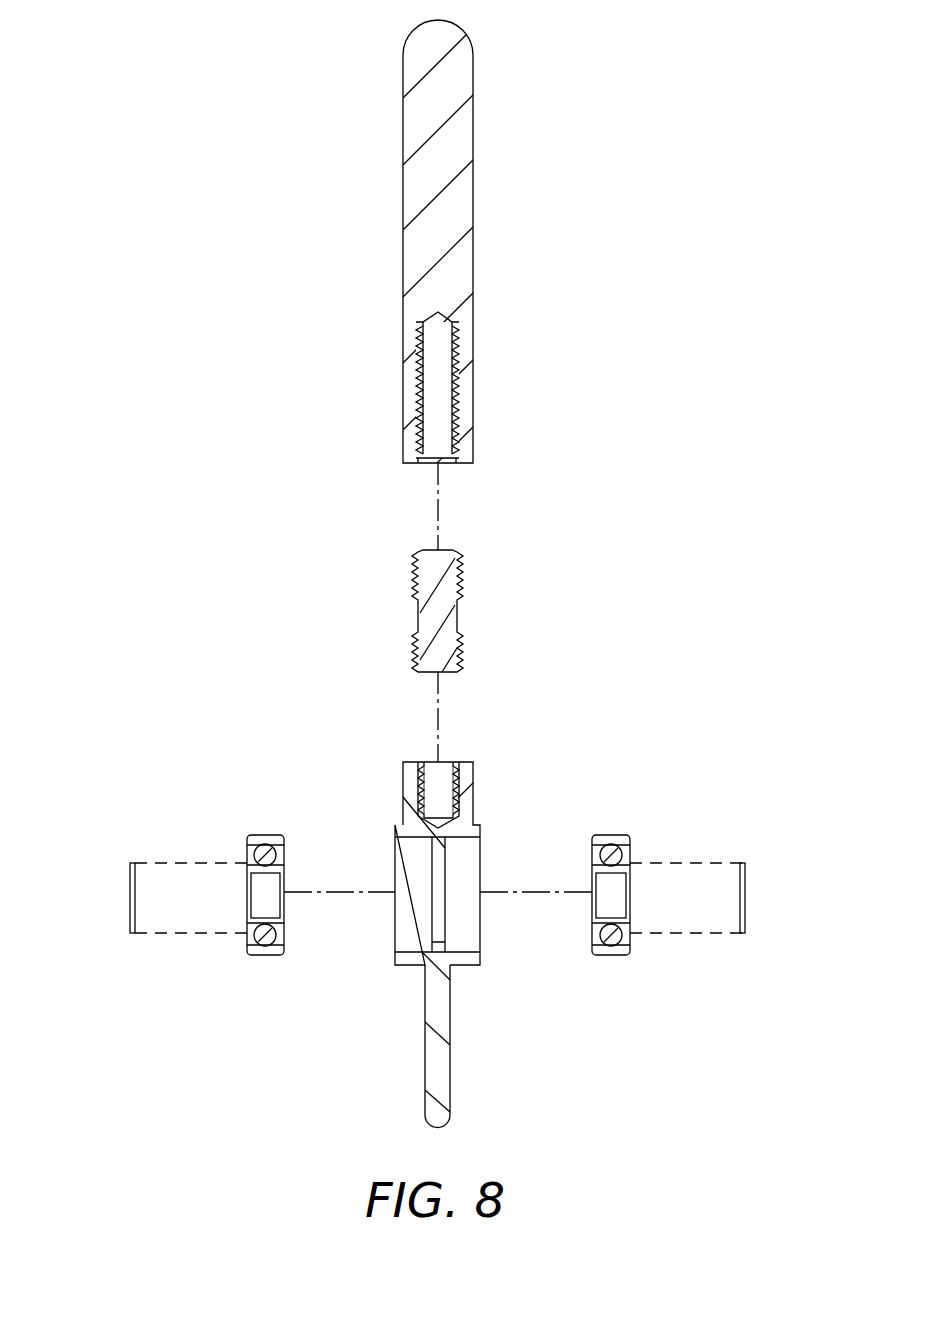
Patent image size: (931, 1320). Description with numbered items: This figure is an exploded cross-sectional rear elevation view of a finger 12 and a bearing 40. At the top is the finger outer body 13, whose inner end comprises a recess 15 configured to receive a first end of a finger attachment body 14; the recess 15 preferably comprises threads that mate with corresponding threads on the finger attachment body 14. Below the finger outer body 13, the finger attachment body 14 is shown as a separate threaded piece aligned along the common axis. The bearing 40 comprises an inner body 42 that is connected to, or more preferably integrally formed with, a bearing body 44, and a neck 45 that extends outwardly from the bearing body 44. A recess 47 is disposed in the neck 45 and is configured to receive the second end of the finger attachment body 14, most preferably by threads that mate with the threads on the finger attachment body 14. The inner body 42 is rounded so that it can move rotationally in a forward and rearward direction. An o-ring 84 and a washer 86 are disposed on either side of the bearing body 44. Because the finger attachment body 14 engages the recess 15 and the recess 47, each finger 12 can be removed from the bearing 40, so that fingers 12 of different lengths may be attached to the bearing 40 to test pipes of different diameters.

The finger 12 is at (228, 208).
The finger outer body 13 is at (458, 147).
The recess 15 is at (447, 385).
The finger attachment body 14 is at (443, 597).
The bearing 40 is at (602, 992).
The bearing body 44 is at (395, 833).
The neck 45 is at (465, 778).
The recess 47 is at (430, 778).
The inner body 42 is at (430, 1058).
The washer 86 is at (265, 845).
The o-ring 84 is at (135, 930).